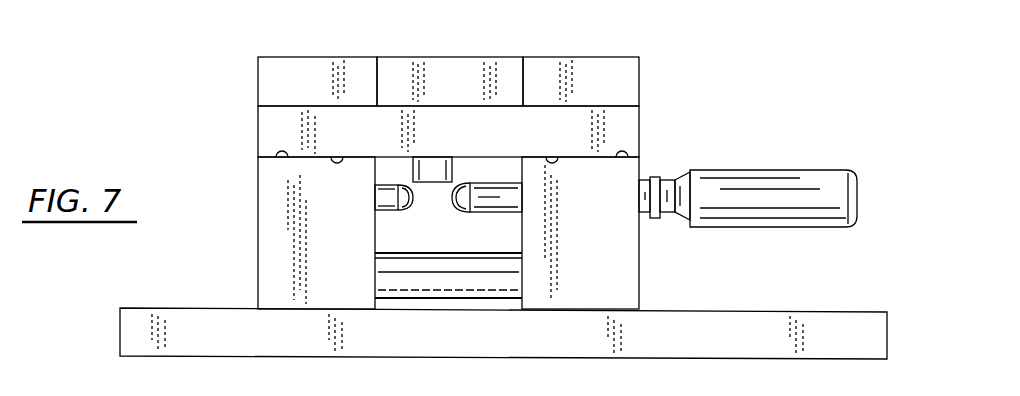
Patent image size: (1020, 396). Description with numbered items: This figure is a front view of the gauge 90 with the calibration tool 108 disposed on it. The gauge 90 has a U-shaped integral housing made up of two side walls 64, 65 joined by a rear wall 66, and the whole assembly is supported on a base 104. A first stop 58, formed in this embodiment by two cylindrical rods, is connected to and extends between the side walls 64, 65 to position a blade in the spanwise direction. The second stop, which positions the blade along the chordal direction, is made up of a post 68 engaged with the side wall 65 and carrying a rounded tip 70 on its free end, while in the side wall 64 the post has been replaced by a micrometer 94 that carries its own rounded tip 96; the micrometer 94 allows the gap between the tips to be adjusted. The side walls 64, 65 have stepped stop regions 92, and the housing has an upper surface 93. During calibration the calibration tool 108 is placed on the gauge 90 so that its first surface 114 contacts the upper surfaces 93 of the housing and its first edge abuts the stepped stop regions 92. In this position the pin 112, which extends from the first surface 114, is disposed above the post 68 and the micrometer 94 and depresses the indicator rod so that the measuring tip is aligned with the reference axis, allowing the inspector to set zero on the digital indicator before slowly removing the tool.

The first stop 58 is at (448, 282).
The side wall 64 is at (628, 266).
The side wall 65 is at (264, 272).
The rear wall 66 is at (460, 72).
The post 68 is at (380, 217).
The rounded tip 70 is at (405, 210).
The gauge 90 is at (745, 81).
The stepped stop region 92 is at (270, 79).
The upper surface 93 is at (284, 158).
The micrometer 94 is at (760, 170).
The rounded tip 96 is at (458, 208).
The base 104 is at (762, 320).
The calibration tool 108 is at (248, 125).
The pin 112 is at (440, 167).
The first surface 114 is at (338, 157).